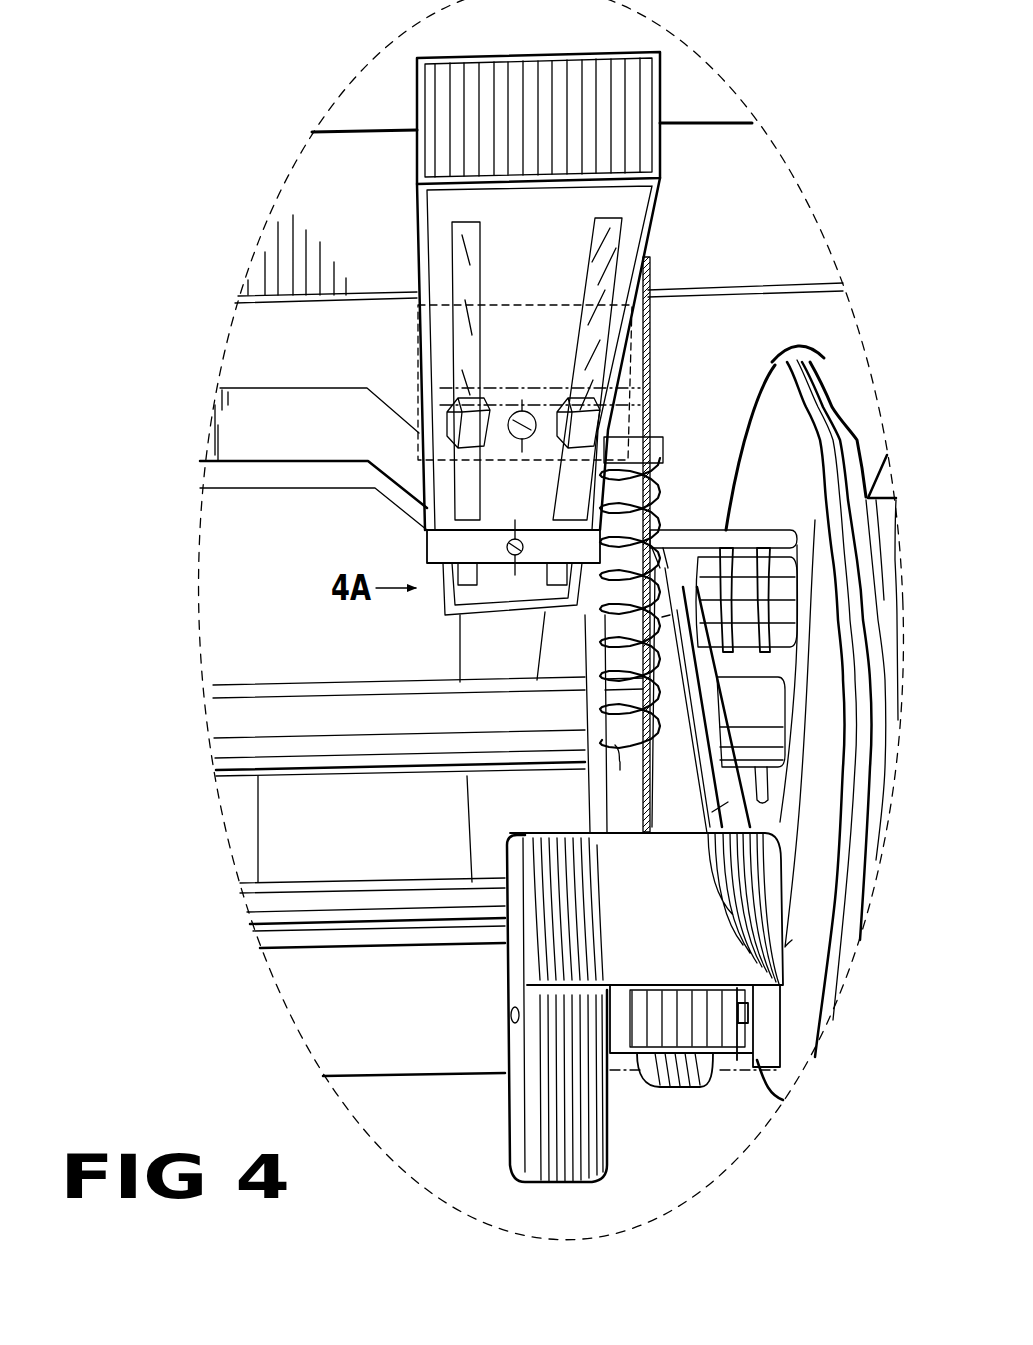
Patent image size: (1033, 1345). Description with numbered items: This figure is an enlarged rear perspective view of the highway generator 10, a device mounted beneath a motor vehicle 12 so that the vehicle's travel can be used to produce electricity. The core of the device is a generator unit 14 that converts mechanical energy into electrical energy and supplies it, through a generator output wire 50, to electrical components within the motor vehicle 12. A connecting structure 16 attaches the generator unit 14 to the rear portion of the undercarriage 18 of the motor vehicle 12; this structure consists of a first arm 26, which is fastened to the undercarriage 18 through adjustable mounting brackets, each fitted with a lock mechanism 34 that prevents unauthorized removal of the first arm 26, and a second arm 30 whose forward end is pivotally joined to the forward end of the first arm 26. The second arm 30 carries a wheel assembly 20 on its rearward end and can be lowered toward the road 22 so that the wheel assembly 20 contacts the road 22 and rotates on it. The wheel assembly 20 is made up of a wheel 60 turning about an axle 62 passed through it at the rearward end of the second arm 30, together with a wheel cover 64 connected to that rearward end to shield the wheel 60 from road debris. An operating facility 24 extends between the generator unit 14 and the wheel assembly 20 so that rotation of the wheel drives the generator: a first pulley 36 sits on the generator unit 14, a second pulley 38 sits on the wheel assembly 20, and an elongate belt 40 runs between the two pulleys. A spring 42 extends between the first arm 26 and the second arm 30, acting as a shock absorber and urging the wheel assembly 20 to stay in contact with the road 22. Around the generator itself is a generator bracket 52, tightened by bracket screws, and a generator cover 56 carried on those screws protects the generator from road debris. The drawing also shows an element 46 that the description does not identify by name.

The highway generator 10 is at (404, 345).
The motor vehicle 12 is at (338, 79).
The generator unit 14 is at (743, 550).
The connecting structure 16 is at (415, 235).
The undercarriage 18 is at (470, 818).
The wheel assembly 20 is at (504, 1117).
The road 22 is at (673, 1183).
The operating facility 24 is at (683, 581).
The first arm 26 is at (527, 77).
The second arm 30 is at (623, 1033).
The lock mechanism 34 is at (437, 545).
The first pulley 36 is at (598, 632).
The second pulley 38 is at (743, 1050).
The elongate belt 40 is at (728, 802).
The spring 42 is at (621, 762).
The rod 46 is at (646, 350).
The generator output wire 50 is at (783, 570).
The generator bracket 52 is at (730, 648).
The generator cover 56 is at (703, 540).
The wheel 60 is at (560, 1157).
The axle 62 is at (510, 1015).
The wheel cover 64 is at (538, 960).